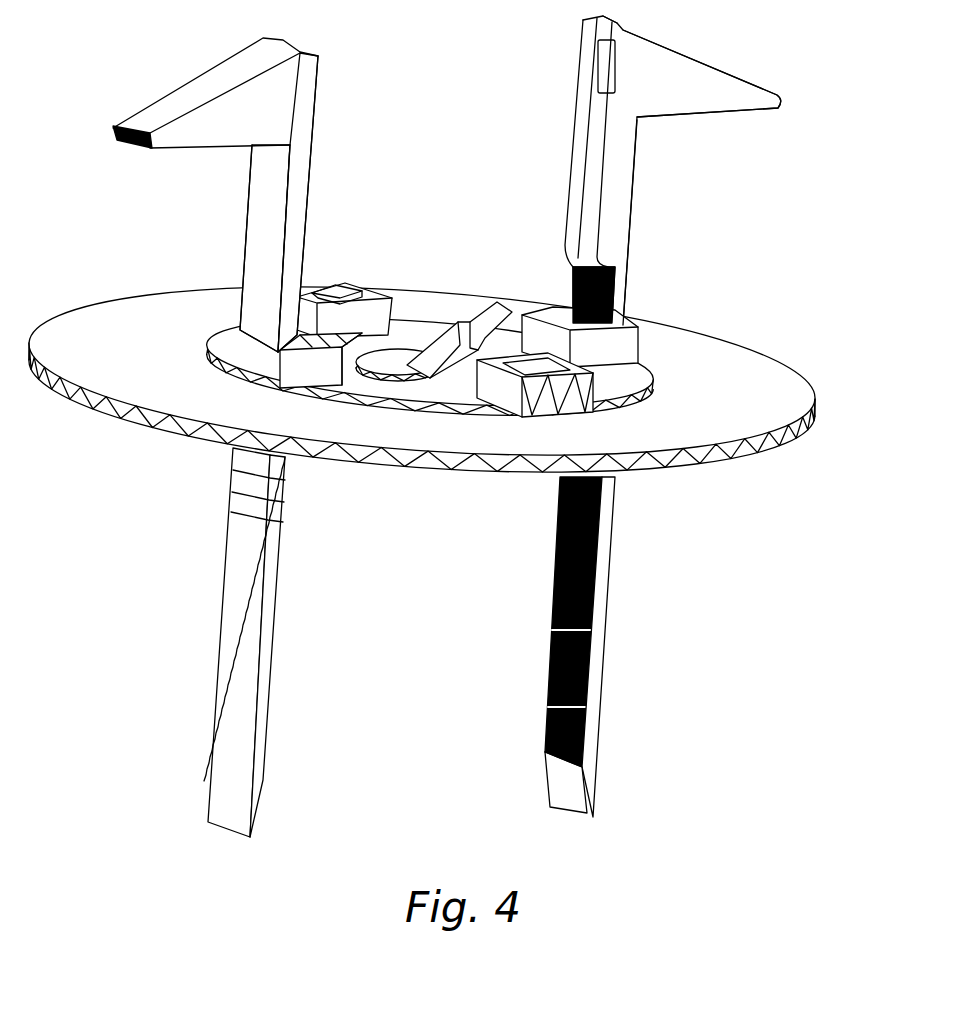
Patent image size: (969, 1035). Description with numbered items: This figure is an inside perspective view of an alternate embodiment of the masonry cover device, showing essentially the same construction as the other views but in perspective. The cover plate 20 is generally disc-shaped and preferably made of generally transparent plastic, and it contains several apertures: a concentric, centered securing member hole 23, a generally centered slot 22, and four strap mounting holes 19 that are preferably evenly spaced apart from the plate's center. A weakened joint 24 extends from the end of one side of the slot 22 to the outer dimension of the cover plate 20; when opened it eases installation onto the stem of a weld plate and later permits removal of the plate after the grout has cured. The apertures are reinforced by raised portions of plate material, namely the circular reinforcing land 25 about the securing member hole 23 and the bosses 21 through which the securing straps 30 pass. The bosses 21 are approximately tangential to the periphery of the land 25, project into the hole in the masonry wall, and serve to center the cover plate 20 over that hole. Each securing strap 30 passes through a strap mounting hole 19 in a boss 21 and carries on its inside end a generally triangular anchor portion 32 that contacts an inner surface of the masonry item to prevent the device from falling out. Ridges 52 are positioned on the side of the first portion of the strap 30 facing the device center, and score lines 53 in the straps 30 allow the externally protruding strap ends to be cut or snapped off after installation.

The strap mounting hole 19 is at (335, 292).
The cover plate 20 is at (775, 375).
The boss 21 is at (372, 272).
The slot 22 is at (412, 388).
The securing member hole 23 is at (437, 310).
The weakened joint 24 is at (497, 303).
The reinforcing land 25 is at (652, 377).
The securing strap 30 is at (610, 416).
The anchor portion 32 is at (718, 73).
The ridges 52 is at (556, 586).
The score lines 53 is at (233, 490).